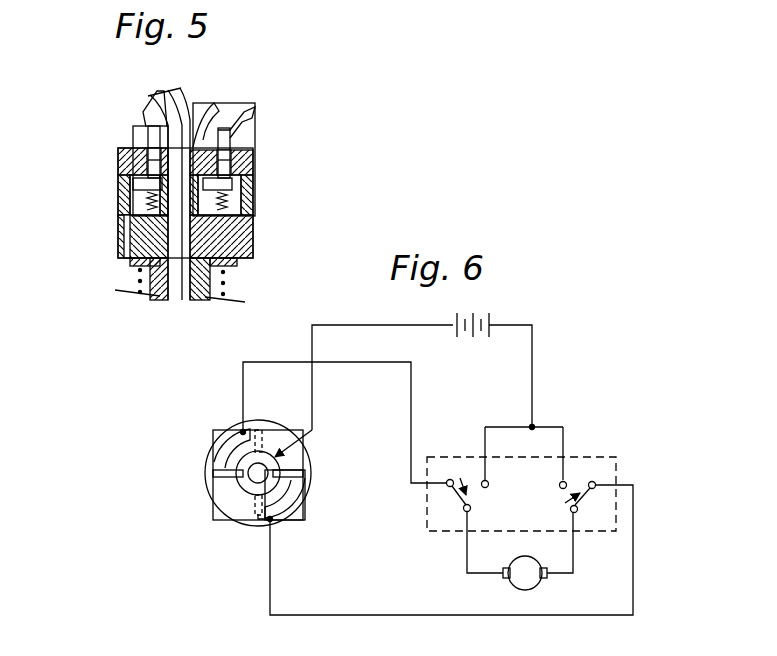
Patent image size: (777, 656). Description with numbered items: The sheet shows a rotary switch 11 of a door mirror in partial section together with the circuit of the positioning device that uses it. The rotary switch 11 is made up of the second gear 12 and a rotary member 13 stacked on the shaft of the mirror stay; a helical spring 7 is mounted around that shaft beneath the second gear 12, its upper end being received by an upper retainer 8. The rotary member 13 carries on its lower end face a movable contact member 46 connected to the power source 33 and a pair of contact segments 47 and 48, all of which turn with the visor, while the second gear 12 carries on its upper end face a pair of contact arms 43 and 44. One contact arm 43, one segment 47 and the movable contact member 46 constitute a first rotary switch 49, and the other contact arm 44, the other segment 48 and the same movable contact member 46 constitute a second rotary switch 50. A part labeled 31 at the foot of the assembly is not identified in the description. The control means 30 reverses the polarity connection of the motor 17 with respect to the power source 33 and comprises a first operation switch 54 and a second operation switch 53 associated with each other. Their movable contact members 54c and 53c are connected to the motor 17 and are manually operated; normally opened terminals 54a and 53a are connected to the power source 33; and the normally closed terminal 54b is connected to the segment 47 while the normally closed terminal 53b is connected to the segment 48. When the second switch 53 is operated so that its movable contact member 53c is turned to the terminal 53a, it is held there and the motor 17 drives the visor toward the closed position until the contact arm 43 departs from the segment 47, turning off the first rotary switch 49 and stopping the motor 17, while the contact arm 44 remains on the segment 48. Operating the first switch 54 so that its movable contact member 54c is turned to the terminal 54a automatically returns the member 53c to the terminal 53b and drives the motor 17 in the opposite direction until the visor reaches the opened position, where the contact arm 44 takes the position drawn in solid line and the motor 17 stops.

In FIG. 5, the helical spring 7 is at (228, 285).
In FIG. 5, the upper retainer 8 is at (234, 268).
In FIG. 5, the rotary switch 11 is at (336, 158).
In FIG. 6, the rotary switch 11 is at (218, 428).
In FIG. 5, the second gear 12 is at (247, 227).
In FIG. 5, the rotary member 13 is at (250, 187).
In FIG. 6, the motor 17 is at (529, 585).
In FIG. 6, the control means 30 is at (598, 535).
In FIG. 5, the central tube 31 is at (178, 280).
In FIG. 6, the power source 33 is at (480, 338).
In FIG. 5, the contact arm 43 is at (118, 190).
In FIG. 6, the contact arm 43 is at (215, 498).
In FIG. 5, the contact arm 44 is at (245, 178).
In FIG. 6, the contact arm 44 is at (305, 473).
In FIG. 6, the movable contact member 46 is at (288, 462).
In FIG. 5, the contact segment 47 is at (130, 165).
In FIG. 6, the contact segment 47 is at (213, 462).
In FIG. 5, the contact segment 48 is at (240, 138).
In FIG. 6, the contact segment 48 is at (270, 519).
In FIG. 5, the first rotary switch 49 is at (95, 63).
In FIG. 6, the first rotary switch 49 is at (119, 353).
In FIG. 5, the second rotary switch 50 is at (283, 65).
In FIG. 6, the second rotary switch 50 is at (337, 545).
In FIG. 6, the second operation switch 53 is at (572, 497).
In FIG. 6, the normally opened terminal 53a is at (566, 480).
In FIG. 6, the normally closed terminal 53b is at (594, 483).
In FIG. 6, the movable contact member 53c is at (578, 512).
In FIG. 6, the first operation switch 54 is at (456, 488).
In FIG. 6, the normally opened terminal 54a is at (480, 478).
In FIG. 6, the normally closed terminal 54b is at (446, 483).
In FIG. 6, the movable contact member 54c is at (464, 512).